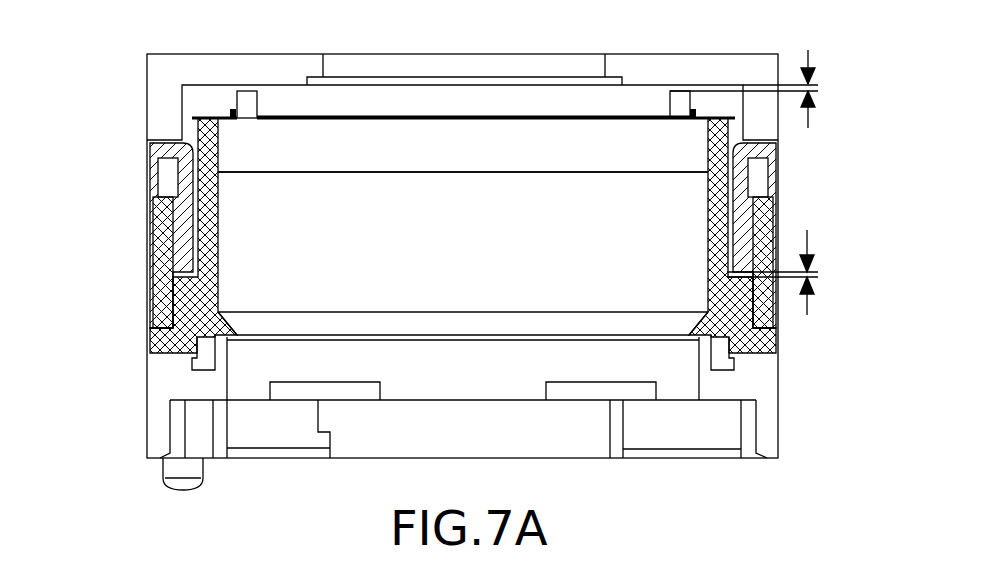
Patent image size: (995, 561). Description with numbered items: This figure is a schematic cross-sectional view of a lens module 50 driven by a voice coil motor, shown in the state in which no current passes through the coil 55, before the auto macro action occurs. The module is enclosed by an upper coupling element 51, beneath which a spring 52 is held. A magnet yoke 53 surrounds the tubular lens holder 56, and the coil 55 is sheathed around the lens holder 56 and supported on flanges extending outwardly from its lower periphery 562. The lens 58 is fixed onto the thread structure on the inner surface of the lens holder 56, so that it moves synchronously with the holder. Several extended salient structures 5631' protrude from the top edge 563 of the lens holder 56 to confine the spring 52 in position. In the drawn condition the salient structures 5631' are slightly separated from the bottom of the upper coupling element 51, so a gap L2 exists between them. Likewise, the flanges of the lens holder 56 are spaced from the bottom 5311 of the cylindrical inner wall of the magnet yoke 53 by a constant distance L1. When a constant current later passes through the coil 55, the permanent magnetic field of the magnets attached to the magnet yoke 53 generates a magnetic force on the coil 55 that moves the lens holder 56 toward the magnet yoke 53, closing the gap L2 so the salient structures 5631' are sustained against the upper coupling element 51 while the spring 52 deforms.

The camera module 50 is at (238, 54).
The upper coupling element 51 is at (647, 60).
The spring 52 is at (507, 113).
The magnet yoke 53 is at (168, 147).
The coil 55 is at (745, 257).
The lens holder 56 is at (262, 185).
The lens 58 is at (231, 112).
The lower periphery 562 is at (778, 335).
The top edge 563 is at (390, 115).
The salient structure 5631' is at (541, 66).
The bottom of the cylindrical inner wall 5311 is at (160, 232).
The constant distance L1 is at (790, 272).
The gap L2 is at (761, 89).